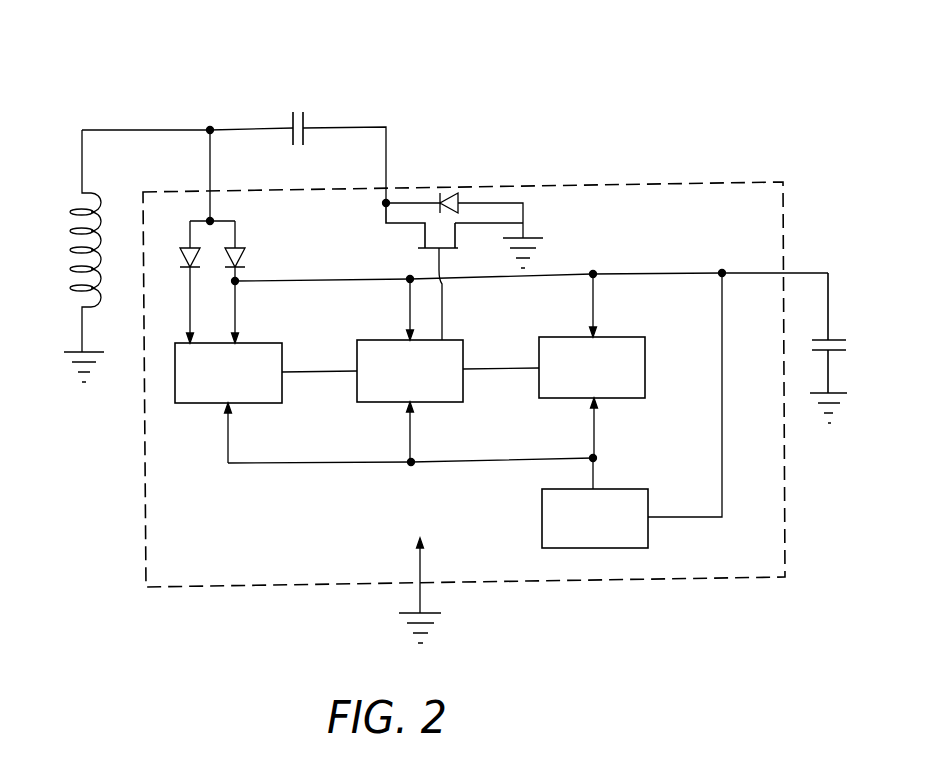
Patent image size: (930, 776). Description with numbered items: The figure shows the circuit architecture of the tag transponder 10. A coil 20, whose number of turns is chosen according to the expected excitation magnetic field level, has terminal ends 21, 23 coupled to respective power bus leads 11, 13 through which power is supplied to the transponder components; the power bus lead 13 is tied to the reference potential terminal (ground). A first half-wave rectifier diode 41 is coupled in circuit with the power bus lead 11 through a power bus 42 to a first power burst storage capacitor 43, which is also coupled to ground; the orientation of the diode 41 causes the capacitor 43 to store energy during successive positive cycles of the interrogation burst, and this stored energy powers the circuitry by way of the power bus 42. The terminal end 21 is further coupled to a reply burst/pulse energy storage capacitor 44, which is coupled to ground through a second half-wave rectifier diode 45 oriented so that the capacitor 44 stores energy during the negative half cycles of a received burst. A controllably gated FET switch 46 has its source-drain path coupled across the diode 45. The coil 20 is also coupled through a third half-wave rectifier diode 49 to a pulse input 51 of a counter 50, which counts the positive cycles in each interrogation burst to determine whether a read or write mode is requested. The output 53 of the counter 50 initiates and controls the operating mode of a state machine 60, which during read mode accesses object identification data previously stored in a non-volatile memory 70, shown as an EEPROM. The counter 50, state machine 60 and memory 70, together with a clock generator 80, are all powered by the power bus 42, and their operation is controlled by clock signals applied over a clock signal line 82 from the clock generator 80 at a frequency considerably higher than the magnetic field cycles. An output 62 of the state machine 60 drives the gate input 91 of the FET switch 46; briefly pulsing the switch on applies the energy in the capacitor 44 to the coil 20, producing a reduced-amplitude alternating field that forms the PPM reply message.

The transponder circuitry 10 is at (608, 182).
The power bus lead 11 is at (211, 200).
The power bus lead 13 is at (842, 393).
The coil 20 is at (73, 255).
The terminal end 21 is at (82, 130).
The terminal end 23 is at (80, 336).
The first half-wave rectifier diode 41 is at (248, 257).
The power bus 42 is at (603, 274).
The first power burst storage capacitor 43 is at (846, 346).
The reply burst/pulse energy storage capacitor 44 is at (306, 122).
The second half-wave rectifier diode 45 is at (447, 193).
The controllably gated FET switch 46 is at (422, 237).
The third half-wave rectifier diode 49 is at (177, 260).
The counter 50 is at (247, 405).
The pulse input 51 is at (192, 343).
The output 53 is at (282, 363).
The state machine 60 is at (427, 402).
The output 62 is at (442, 338).
The non-volatile memory 70 is at (613, 337).
The clock generator 80 is at (613, 489).
The clock signal line 82 is at (295, 465).
The gate input 91 is at (442, 258).